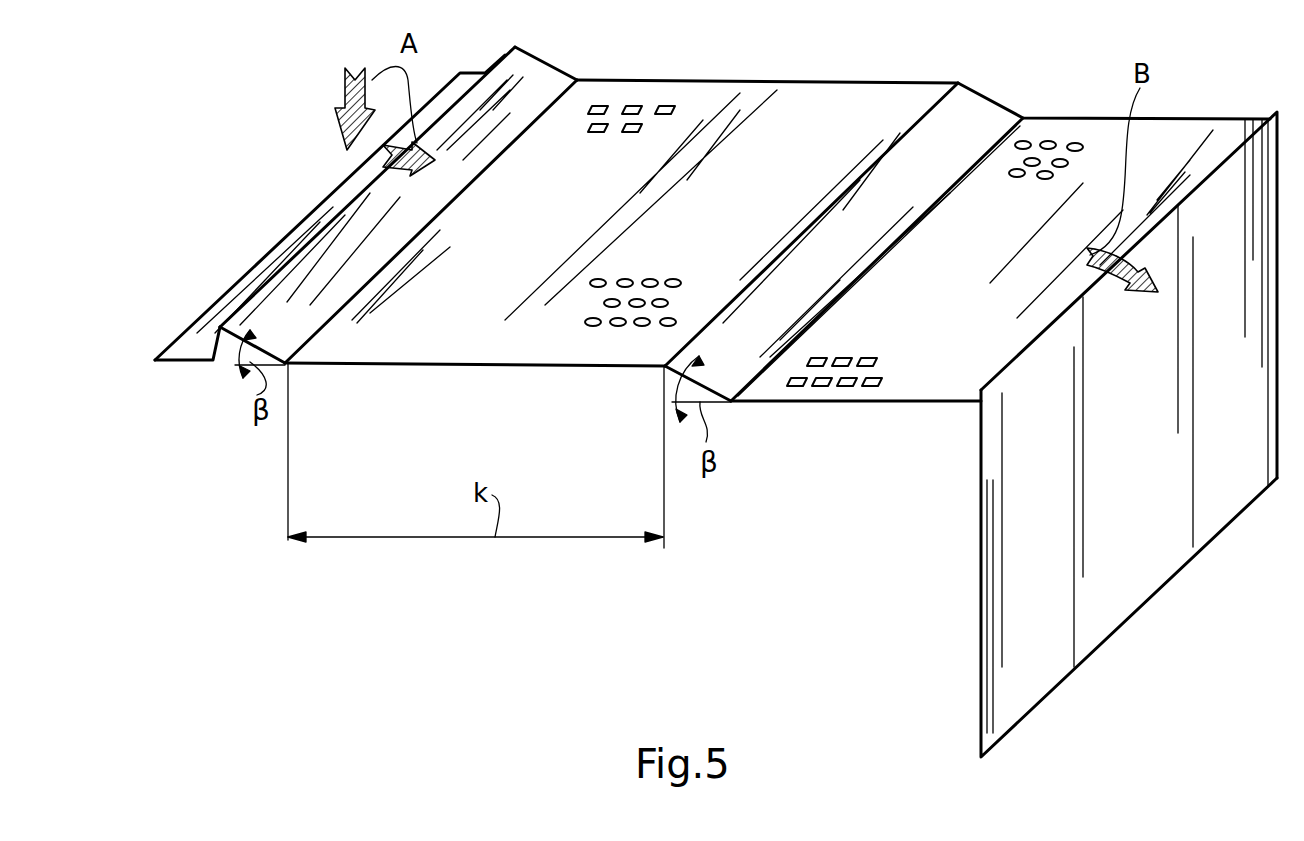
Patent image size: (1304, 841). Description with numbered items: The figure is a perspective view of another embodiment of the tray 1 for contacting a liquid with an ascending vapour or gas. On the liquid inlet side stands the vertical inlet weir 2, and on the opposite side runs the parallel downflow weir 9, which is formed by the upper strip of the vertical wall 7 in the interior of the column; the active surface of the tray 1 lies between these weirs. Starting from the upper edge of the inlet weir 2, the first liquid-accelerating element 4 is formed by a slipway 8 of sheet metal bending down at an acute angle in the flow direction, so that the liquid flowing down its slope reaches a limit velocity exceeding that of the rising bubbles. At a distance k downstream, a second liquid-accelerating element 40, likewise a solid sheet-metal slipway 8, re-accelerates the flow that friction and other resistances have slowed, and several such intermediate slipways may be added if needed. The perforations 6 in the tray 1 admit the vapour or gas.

The tray 1 is at (777, 82).
The inlet weir 2 is at (213, 363).
The liquid-accelerating element 4 is at (560, 68).
The perforations / holes 6 is at (665, 108).
The vertical wall 7 is at (1017, 508).
The slipway 8 is at (528, 72).
The downflow weir 9 is at (1228, 140).
The second liquid-accelerating element 40 is at (990, 100).